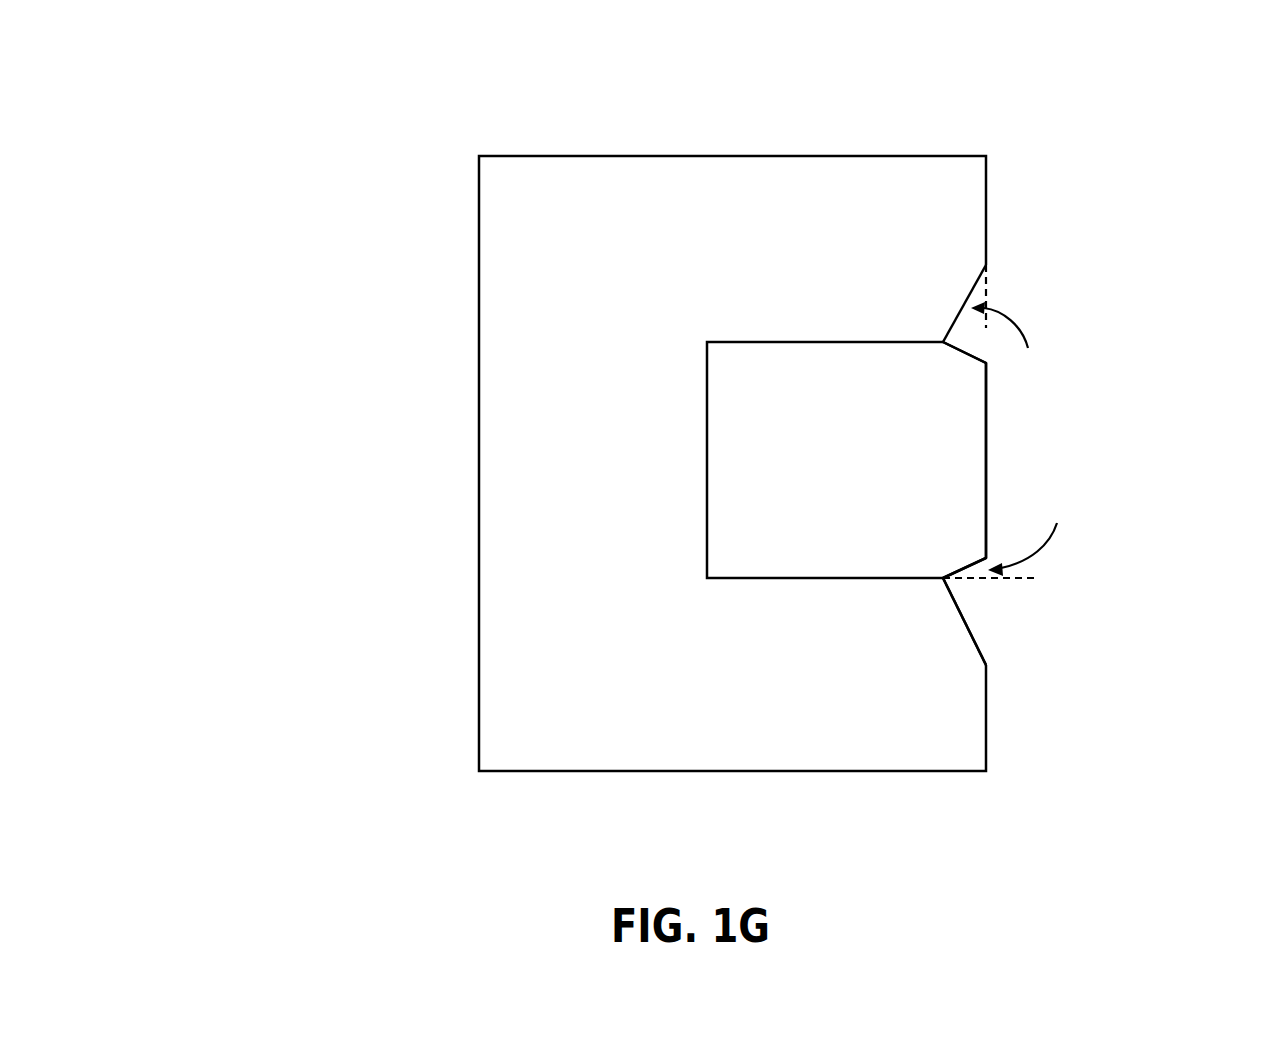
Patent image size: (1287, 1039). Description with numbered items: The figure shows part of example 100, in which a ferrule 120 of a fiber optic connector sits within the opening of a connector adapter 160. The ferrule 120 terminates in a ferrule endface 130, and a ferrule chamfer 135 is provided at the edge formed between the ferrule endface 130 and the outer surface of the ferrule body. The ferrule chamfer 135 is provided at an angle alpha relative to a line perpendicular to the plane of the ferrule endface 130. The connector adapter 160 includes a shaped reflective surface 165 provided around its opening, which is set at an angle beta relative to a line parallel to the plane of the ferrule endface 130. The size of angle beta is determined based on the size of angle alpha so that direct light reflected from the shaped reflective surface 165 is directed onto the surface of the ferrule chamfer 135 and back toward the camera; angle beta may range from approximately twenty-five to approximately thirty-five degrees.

The example 100 is at (173, 46).
The ferrule 120 is at (760, 385).
The ferrule endface 130 is at (988, 500).
The ferrule chamfer 135 is at (962, 571).
The connector adapter 160 is at (531, 730).
The shaped reflective surface 165 is at (970, 641).